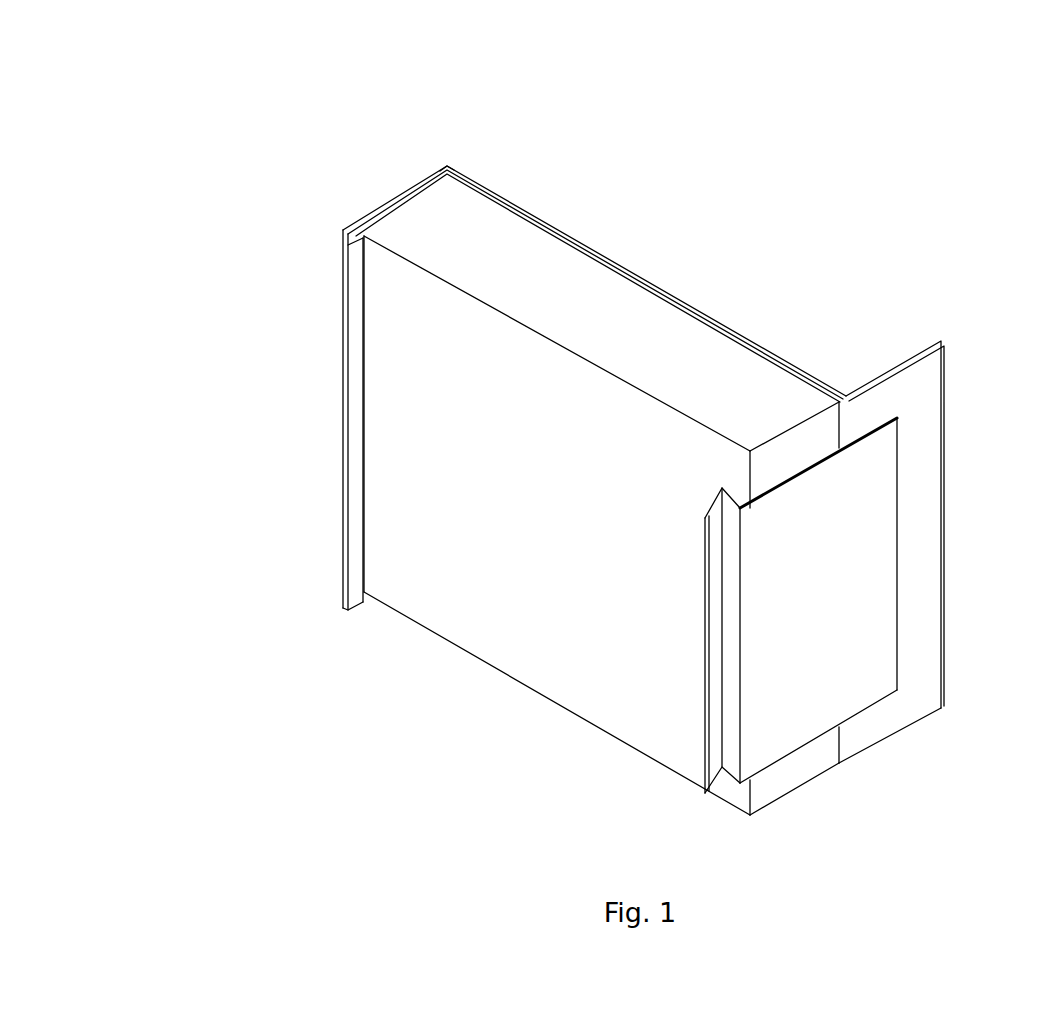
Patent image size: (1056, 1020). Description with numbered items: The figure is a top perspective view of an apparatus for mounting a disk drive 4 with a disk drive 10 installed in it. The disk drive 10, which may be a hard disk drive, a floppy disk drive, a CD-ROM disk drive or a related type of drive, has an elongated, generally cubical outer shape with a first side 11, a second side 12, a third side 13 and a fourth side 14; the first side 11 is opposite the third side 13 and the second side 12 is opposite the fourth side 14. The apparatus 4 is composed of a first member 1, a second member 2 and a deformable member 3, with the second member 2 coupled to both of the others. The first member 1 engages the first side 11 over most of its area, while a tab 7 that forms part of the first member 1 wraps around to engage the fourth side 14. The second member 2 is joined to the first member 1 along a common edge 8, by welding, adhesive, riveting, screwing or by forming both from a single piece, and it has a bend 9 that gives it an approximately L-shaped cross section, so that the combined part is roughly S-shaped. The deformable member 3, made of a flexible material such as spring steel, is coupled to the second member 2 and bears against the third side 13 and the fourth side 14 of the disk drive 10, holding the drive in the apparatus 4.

The first member 1 is at (383, 205).
The second member 2 is at (600, 252).
The deformable member 3 is at (825, 572).
The apparatus for mounting a disk drive 4 is at (772, 327).
The tab 7 is at (347, 438).
The common edge 8 is at (447, 166).
The bend 9 is at (846, 394).
The disk drive 10 is at (500, 515).
The first side 11 is at (405, 198).
The second side 12 is at (527, 212).
The third side 13 is at (795, 763).
The fourth side 14 is at (548, 522).